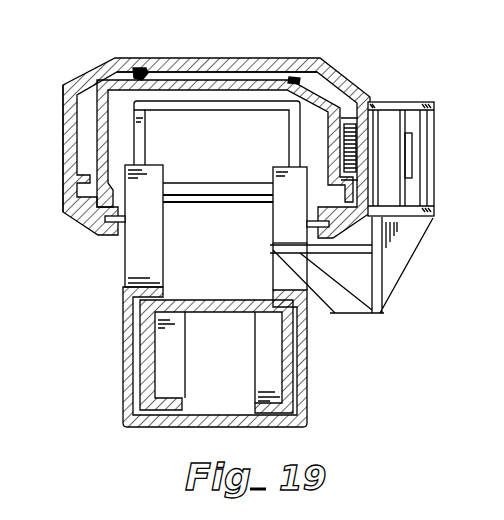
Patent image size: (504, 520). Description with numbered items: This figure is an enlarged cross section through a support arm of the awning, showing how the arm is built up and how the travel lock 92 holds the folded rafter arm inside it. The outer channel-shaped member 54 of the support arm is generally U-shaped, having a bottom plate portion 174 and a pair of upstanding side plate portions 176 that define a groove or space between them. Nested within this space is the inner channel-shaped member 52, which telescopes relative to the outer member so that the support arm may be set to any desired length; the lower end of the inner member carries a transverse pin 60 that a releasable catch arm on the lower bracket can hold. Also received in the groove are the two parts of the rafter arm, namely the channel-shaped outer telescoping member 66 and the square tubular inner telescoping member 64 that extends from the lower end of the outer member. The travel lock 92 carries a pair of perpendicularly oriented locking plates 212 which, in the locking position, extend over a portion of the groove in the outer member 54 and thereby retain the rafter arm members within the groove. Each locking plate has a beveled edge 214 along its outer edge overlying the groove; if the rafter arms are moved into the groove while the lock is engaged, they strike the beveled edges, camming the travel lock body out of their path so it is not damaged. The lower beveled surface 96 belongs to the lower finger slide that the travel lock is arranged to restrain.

The inner channel-shaped member 52 is at (73, 82).
The outer channel-shaped member 54 is at (134, 72).
The bottom plate portion 174 is at (200, 62).
The side plate portions 176 is at (70, 152).
The transverse pin 60 is at (240, 190).
The outer telescoping member 66 is at (147, 218).
The inner telescoping member 64 is at (178, 300).
The beveled edge 214 is at (274, 258).
The locking plates 212 is at (343, 312).
The travel lock 92 is at (408, 264).
The lower beveled surface 96 is at (9, 433).